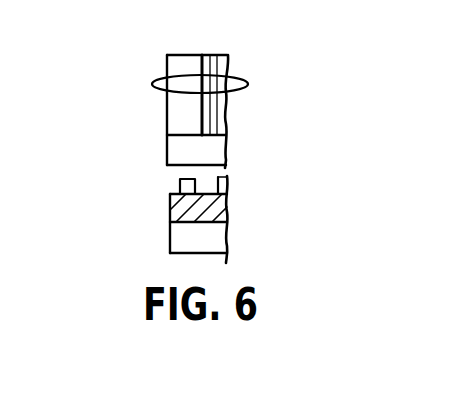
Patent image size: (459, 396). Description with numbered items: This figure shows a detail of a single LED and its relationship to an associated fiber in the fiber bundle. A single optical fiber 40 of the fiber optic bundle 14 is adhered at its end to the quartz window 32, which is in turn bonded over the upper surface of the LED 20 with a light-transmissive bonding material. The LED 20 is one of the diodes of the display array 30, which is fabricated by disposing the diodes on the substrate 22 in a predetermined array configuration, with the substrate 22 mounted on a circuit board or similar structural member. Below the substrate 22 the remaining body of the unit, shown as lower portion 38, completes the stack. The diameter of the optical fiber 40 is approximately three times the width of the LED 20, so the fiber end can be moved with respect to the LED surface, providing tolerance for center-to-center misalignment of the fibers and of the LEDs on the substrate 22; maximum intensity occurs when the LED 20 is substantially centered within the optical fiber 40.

The fiber optic bundle 14 is at (247, 85).
The LED 20 is at (180, 185).
The substrate 22 is at (170, 202).
The display array 30 is at (171, 220).
The quartz window 32 is at (217, 152).
The lower body portion 38 is at (210, 238).
The optical fiber 40 is at (190, 65).